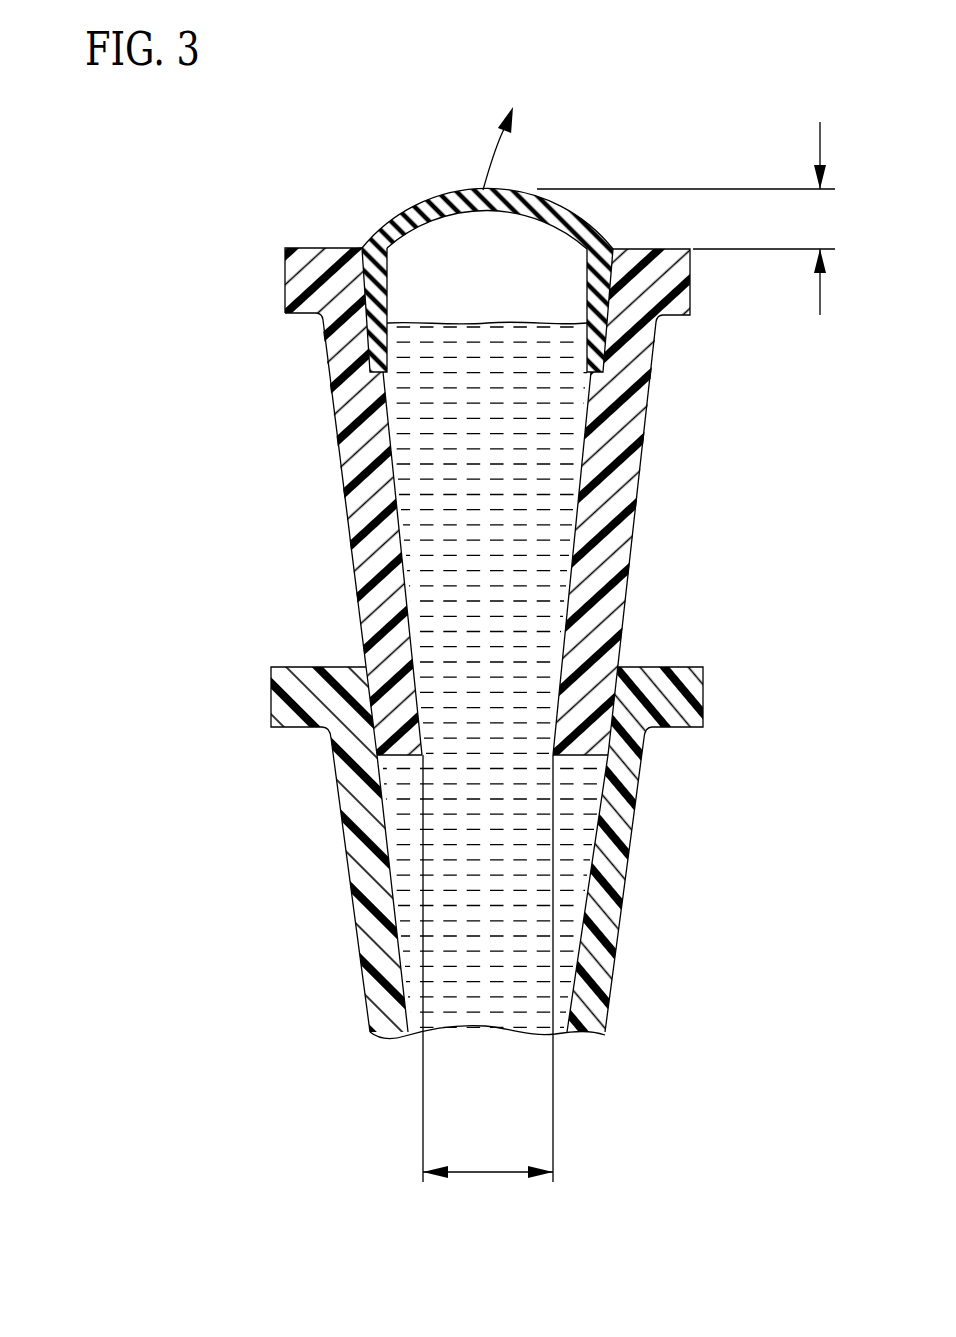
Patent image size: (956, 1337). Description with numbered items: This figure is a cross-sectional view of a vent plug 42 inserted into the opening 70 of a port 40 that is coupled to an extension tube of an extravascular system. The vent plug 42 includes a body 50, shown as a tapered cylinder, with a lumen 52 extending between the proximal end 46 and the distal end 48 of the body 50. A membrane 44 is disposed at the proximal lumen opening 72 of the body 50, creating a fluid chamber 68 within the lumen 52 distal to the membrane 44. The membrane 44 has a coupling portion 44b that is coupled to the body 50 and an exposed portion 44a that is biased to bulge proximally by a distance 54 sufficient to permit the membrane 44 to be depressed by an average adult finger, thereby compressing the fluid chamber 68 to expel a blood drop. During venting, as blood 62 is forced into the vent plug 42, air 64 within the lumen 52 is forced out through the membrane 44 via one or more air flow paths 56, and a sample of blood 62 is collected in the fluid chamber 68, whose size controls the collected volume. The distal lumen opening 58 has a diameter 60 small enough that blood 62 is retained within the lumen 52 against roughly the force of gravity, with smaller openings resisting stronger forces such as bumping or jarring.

The port 40 is at (502, 853).
The vent plug 42 is at (464, 494).
The membrane 44 is at (425, 236).
The exposed portion 44a is at (420, 210).
The coupling portion 44b is at (380, 327).
The proximal end 46 is at (310, 248).
The distal end 48 is at (578, 755).
The body 50 is at (628, 468).
The lumen 52 is at (355, 462).
The distance 54 is at (820, 122).
The air flow path 56 is at (492, 162).
The distal lumen opening 58 is at (380, 755).
The diameter 60 is at (488, 1173).
The blood 62 is at (491, 677).
The air 64 is at (488, 277).
The fluid chamber 68 is at (422, 532).
The opening 70 is at (362, 665).
The proximal lumen opening 72 is at (363, 246).